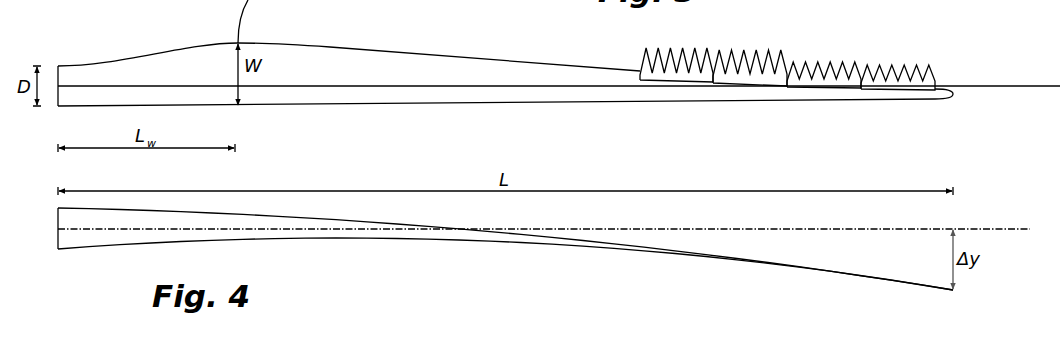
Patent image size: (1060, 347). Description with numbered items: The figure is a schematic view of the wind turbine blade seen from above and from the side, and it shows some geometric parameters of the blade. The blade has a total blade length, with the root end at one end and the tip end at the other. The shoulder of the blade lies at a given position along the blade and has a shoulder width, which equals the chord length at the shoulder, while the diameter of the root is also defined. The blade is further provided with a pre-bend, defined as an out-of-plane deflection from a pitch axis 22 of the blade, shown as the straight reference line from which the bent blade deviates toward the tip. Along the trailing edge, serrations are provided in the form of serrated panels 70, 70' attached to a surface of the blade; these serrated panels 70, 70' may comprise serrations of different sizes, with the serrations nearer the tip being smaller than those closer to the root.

In FIG. 3, the pitch axis 22 is at (412, 86).
In FIG. 4, the pitch axis 22 is at (973, 229).
In FIG. 3, the serrated panel 70 is at (861, 45).
In FIG. 3, the serrated panel 70' is at (713, 43).